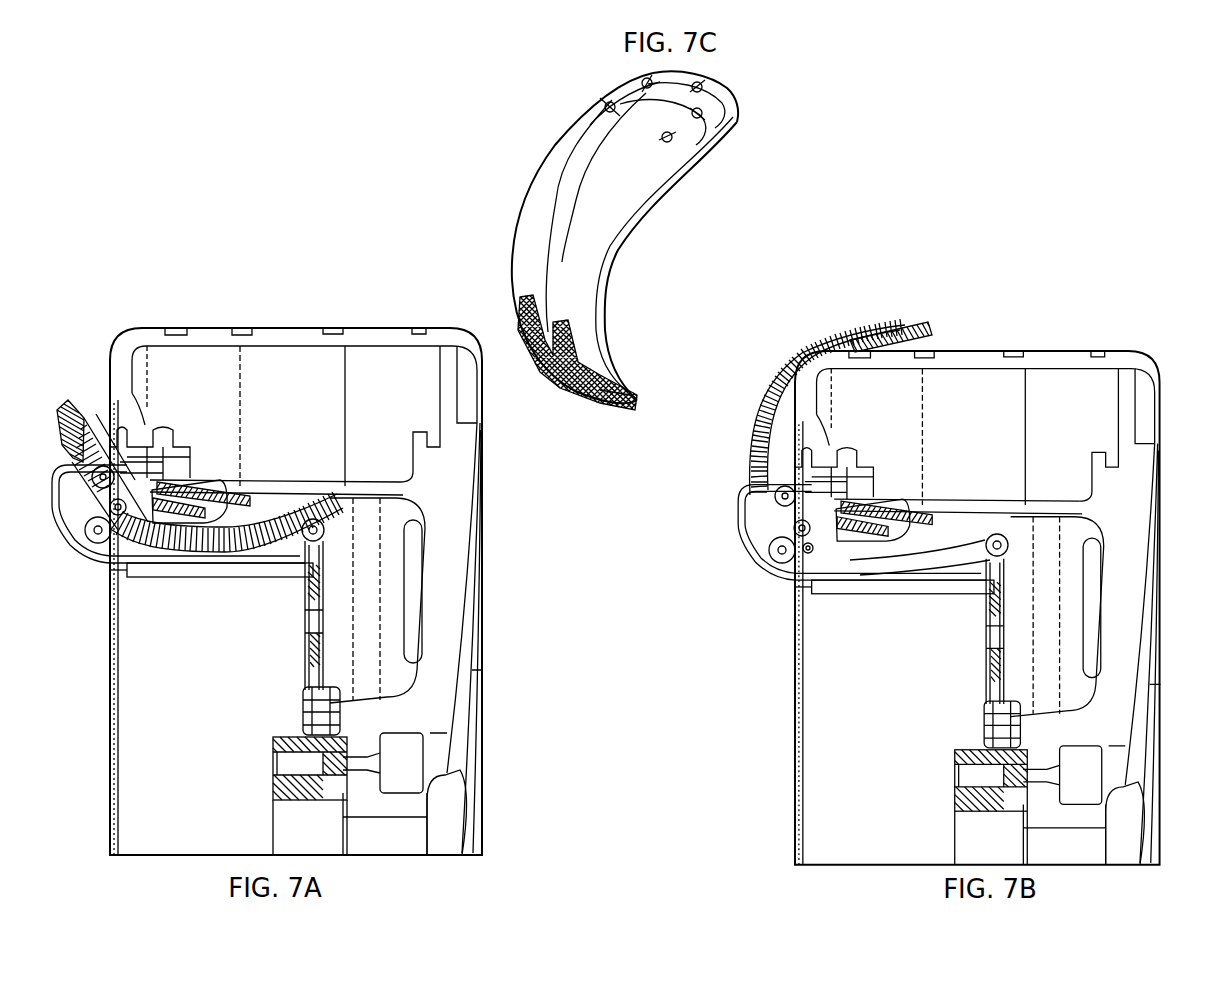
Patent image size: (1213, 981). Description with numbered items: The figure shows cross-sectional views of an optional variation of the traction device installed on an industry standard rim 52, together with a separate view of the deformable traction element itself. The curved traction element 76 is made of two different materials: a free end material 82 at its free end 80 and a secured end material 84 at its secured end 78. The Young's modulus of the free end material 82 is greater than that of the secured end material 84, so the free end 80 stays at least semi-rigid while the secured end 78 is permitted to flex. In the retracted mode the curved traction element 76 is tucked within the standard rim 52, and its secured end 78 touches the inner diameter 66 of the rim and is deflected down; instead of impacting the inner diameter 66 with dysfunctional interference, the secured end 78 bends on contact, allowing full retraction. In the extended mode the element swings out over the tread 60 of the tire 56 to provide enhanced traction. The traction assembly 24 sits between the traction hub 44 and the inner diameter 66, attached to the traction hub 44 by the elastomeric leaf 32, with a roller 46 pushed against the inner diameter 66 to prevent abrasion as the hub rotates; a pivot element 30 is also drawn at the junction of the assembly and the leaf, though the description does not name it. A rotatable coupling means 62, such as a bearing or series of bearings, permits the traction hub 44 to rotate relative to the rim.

In FIG. 7A, the traction assembly 24 is at (133, 578).
In FIG. 7B, the traction assembly 24 is at (772, 580).
In FIG. 7A, the pivot pin 30 is at (325, 533).
In FIG. 7B, the pivot pin 30 is at (1010, 549).
In FIG. 7A, the elastomeric leaf 32 is at (325, 557).
In FIG. 7B, the elastomeric leaf 32 is at (1010, 573).
In FIG. 7A, the traction hub 44 is at (165, 791).
In FIG. 7B, the traction hub 44 is at (862, 789).
In FIG. 7A, the roller 46 is at (190, 477).
In FIG. 7B, the roller 46 is at (878, 496).
In FIG. 7A, the industry standard rim 52 is at (502, 529).
In FIG. 7A, the tire 56 is at (367, 403).
In FIG. 7B, the tire 56 is at (1052, 416).
In FIG. 7A, the tread 60 is at (372, 327).
In FIG. 7B, the tread 60 is at (1030, 350).
In FIG. 7A, the rotatable coupling means 62 is at (288, 711).
In FIG. 7B, the rotatable coupling means 62 is at (966, 713).
In FIG. 7A, the inner diameter 66 is at (260, 481).
In FIG. 7B, the inner diameter 66 is at (936, 498).
In FIG. 7C, the curved traction element 76 is at (505, 172).
In FIG. 7B, the curved traction element 76 is at (781, 343).
In FIG. 7C, the secured end 78 is at (647, 376).
In FIG. 7C, the free end 80 is at (712, 163).
In FIG. 7A, the free end material 82 is at (86, 418).
In FIG. 7C, the free end material 82 is at (568, 130).
In FIG. 7B, the free end material 82 is at (914, 326).
In FIG. 7A, the secured end material 84 is at (307, 510).
In FIG. 7C, the secured end material 84 is at (588, 395).
In FIG. 7B, the secured end material 84 is at (752, 545).